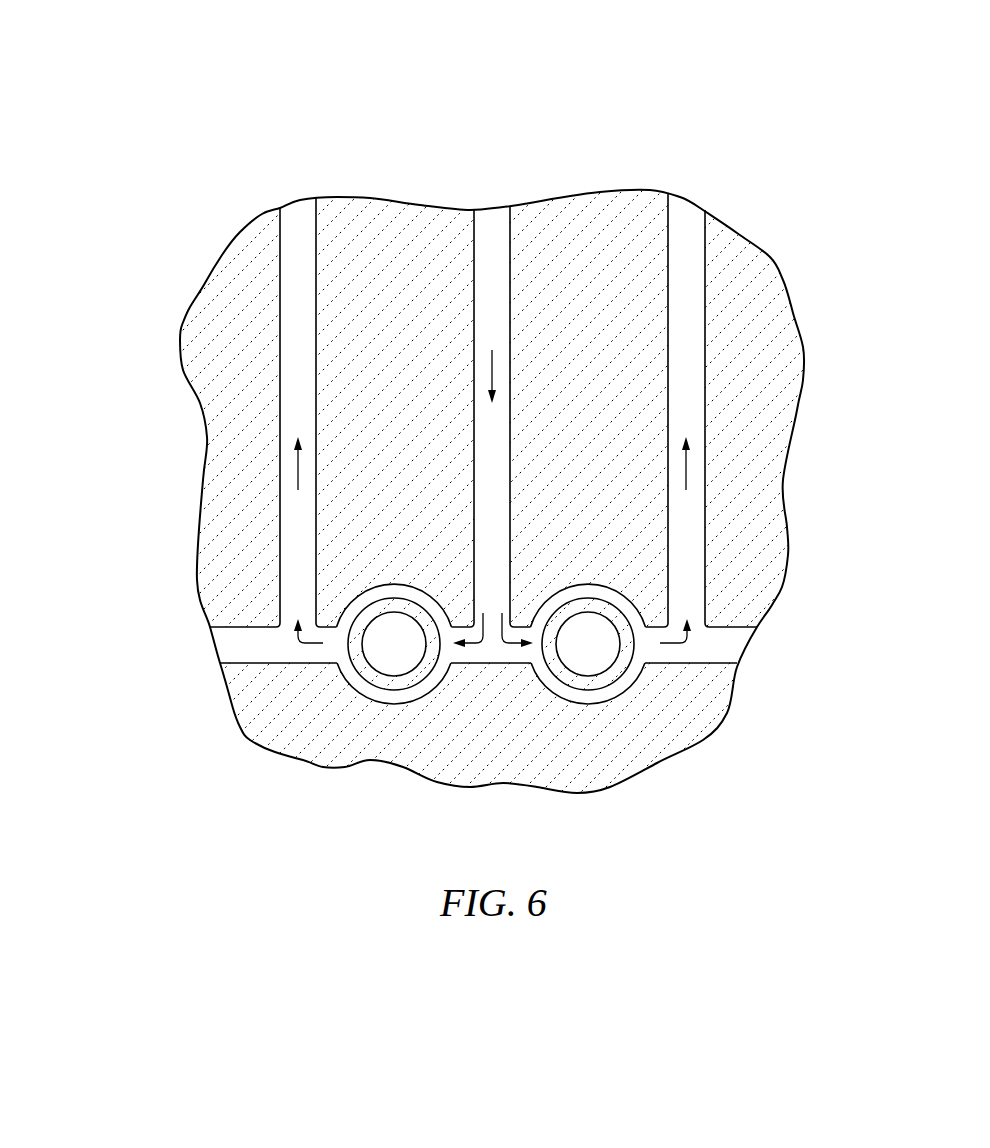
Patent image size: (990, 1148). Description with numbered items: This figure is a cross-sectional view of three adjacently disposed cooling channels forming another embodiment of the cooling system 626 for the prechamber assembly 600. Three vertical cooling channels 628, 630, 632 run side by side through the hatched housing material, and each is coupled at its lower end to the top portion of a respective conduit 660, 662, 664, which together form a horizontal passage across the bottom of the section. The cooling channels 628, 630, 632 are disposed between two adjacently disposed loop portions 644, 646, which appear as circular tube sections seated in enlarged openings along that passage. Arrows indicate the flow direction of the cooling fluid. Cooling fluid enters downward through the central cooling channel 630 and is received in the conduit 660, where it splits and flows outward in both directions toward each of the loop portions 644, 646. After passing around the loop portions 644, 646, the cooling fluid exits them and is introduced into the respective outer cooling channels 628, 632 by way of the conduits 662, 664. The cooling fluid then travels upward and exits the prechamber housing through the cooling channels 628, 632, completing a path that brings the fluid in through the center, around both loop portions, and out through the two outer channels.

The prechamber assembly 600 is at (890, 152).
The cooling system 626 is at (700, 172).
The cooling channel 628 is at (303, 227).
The cooling channel 630 is at (498, 235).
The cooling channel 632 is at (687, 370).
The loop portion 644 is at (390, 697).
The loop portion 646 is at (585, 697).
The conduit 660 is at (493, 645).
The conduit 662 is at (245, 645).
The conduit 664 is at (727, 645).